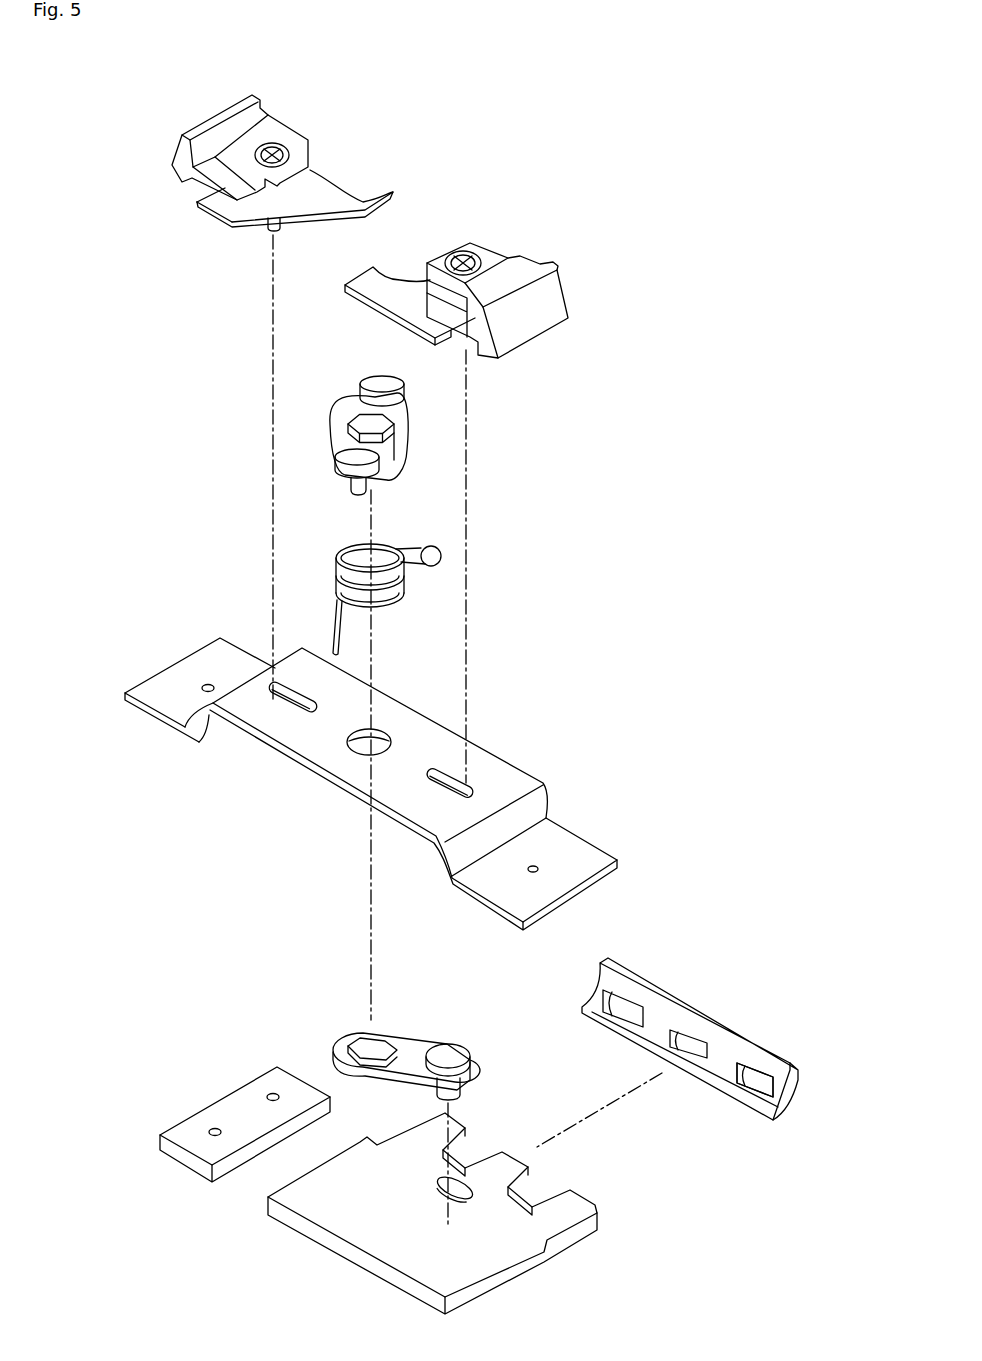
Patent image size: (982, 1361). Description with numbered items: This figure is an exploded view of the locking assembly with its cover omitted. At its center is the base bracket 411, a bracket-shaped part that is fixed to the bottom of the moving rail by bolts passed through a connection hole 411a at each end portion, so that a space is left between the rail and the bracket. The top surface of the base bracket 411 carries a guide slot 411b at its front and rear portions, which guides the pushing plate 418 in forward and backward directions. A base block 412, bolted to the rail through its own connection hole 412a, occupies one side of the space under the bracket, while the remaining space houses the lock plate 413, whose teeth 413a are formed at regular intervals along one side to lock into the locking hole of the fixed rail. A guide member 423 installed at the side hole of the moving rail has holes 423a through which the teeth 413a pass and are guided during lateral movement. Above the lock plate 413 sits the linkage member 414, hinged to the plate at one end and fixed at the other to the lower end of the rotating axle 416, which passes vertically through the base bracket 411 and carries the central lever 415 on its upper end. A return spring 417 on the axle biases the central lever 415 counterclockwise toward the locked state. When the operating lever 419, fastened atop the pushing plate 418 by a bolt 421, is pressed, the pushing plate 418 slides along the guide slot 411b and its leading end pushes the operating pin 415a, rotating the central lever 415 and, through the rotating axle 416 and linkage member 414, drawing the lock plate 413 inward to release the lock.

The base bracket 411 is at (287, 727).
The connection hole 411a is at (533, 866).
The guide slot 411b is at (440, 770).
The base block 412 is at (193, 1133).
The connection hole 412a is at (273, 1093).
The lock plate 413 is at (507, 1243).
The teeth 413a is at (473, 1128).
The linkage member 414 is at (408, 1045).
The central lever 415 is at (340, 422).
The operating pin 415a is at (353, 495).
The rotating axle 416 is at (393, 473).
The return spring 417 is at (393, 606).
The pushing plate 418 is at (227, 207).
The operating lever 419 is at (300, 147).
The bolt 421 is at (275, 150).
The guide member 423 is at (682, 1007).
The hole 423a is at (758, 1083).